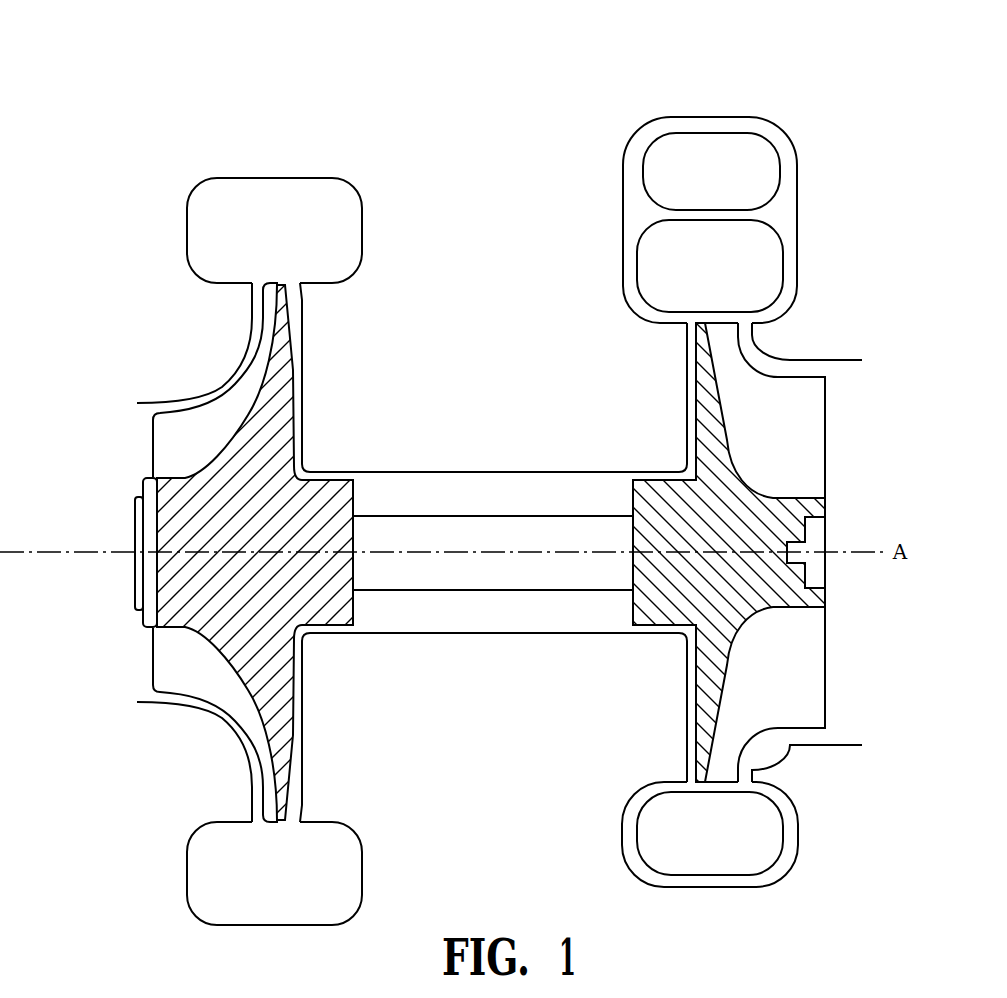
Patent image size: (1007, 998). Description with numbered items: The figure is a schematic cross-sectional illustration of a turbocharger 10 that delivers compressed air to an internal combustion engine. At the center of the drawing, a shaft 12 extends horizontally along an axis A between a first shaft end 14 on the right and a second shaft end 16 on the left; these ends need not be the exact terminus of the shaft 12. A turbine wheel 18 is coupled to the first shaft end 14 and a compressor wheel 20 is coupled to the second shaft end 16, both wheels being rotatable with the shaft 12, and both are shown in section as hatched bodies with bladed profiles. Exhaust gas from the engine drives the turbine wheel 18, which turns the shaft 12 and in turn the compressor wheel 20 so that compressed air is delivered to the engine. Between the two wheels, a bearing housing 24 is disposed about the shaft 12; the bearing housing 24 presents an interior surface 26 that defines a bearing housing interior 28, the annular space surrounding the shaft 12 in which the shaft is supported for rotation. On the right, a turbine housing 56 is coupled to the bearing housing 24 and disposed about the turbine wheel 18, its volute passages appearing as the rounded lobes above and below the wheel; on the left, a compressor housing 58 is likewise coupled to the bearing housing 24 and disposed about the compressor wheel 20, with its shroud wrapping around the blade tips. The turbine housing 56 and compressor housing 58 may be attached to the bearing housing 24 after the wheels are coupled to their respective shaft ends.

The turbocharger 10 is at (128, 108).
The shaft 12 is at (473, 532).
The first shaft end 14 is at (633, 538).
The second shaft end 16 is at (357, 540).
The turbine wheel 18 is at (777, 520).
The compressor wheel 20 is at (235, 482).
The bearing housing 24 is at (503, 468).
The interior surface 26 is at (530, 474).
The bearing housing interior 28 is at (490, 608).
The turbine housing 56 is at (795, 212).
The compressor housing 58 is at (187, 232).